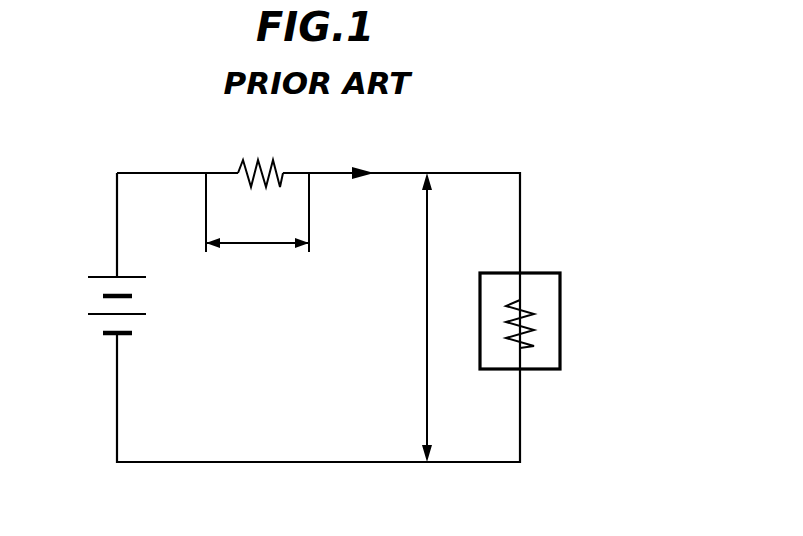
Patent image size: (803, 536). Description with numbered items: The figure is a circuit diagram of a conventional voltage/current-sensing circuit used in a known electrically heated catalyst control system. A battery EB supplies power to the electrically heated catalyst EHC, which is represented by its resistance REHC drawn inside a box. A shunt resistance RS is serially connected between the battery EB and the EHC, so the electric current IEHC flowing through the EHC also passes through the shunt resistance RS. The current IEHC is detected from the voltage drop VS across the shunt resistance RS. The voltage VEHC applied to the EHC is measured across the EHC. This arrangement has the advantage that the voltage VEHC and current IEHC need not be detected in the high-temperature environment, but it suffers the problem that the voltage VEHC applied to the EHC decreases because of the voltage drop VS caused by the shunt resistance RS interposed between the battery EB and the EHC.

The shunt resistance RS is at (260, 155).
The voltage drop VS is at (257, 212).
The electric current IEHC is at (359, 156).
The battery EB is at (97, 305).
The voltage VEHC is at (429, 317).
The electrically heated catalyst EHC is at (543, 273).
The resistance of the EHC REHC is at (533, 333).